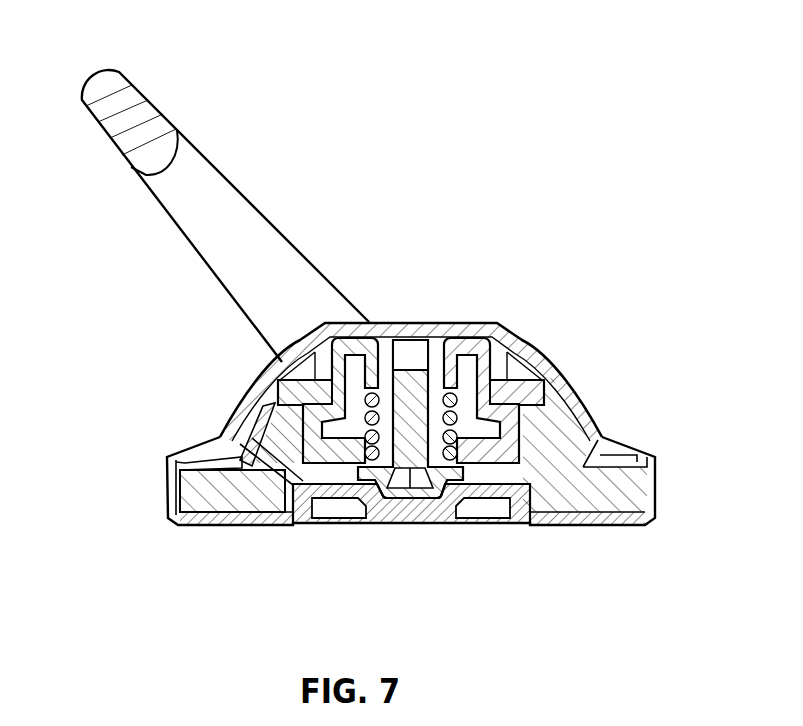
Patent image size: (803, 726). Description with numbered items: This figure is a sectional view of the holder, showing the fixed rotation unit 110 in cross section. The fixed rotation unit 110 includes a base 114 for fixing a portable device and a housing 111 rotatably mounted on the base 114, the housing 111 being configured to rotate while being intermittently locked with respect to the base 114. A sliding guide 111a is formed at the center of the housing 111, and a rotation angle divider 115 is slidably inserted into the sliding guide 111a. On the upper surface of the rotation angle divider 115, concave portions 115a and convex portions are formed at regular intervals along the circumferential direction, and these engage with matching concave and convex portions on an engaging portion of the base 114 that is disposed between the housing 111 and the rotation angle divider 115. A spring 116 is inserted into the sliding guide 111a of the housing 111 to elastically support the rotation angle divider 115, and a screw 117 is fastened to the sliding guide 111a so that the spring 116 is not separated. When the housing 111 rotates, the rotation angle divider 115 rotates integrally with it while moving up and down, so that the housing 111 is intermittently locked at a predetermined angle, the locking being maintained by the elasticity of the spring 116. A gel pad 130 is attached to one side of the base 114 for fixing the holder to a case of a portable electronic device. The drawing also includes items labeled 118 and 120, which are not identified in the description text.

The fixed rotation unit 110 is at (148, 488).
The housing 111 is at (520, 338).
The sliding guide 111a is at (298, 372).
The base 114 is at (213, 508).
The rotation angle divider 115 is at (530, 420).
The concave portion 115a is at (262, 408).
The spring 116 is at (386, 358).
The screw 117 is at (415, 474).
The circuit board 118 is at (389, 524).
The finger 120 is at (176, 80).
The gel pad 130 is at (614, 522).